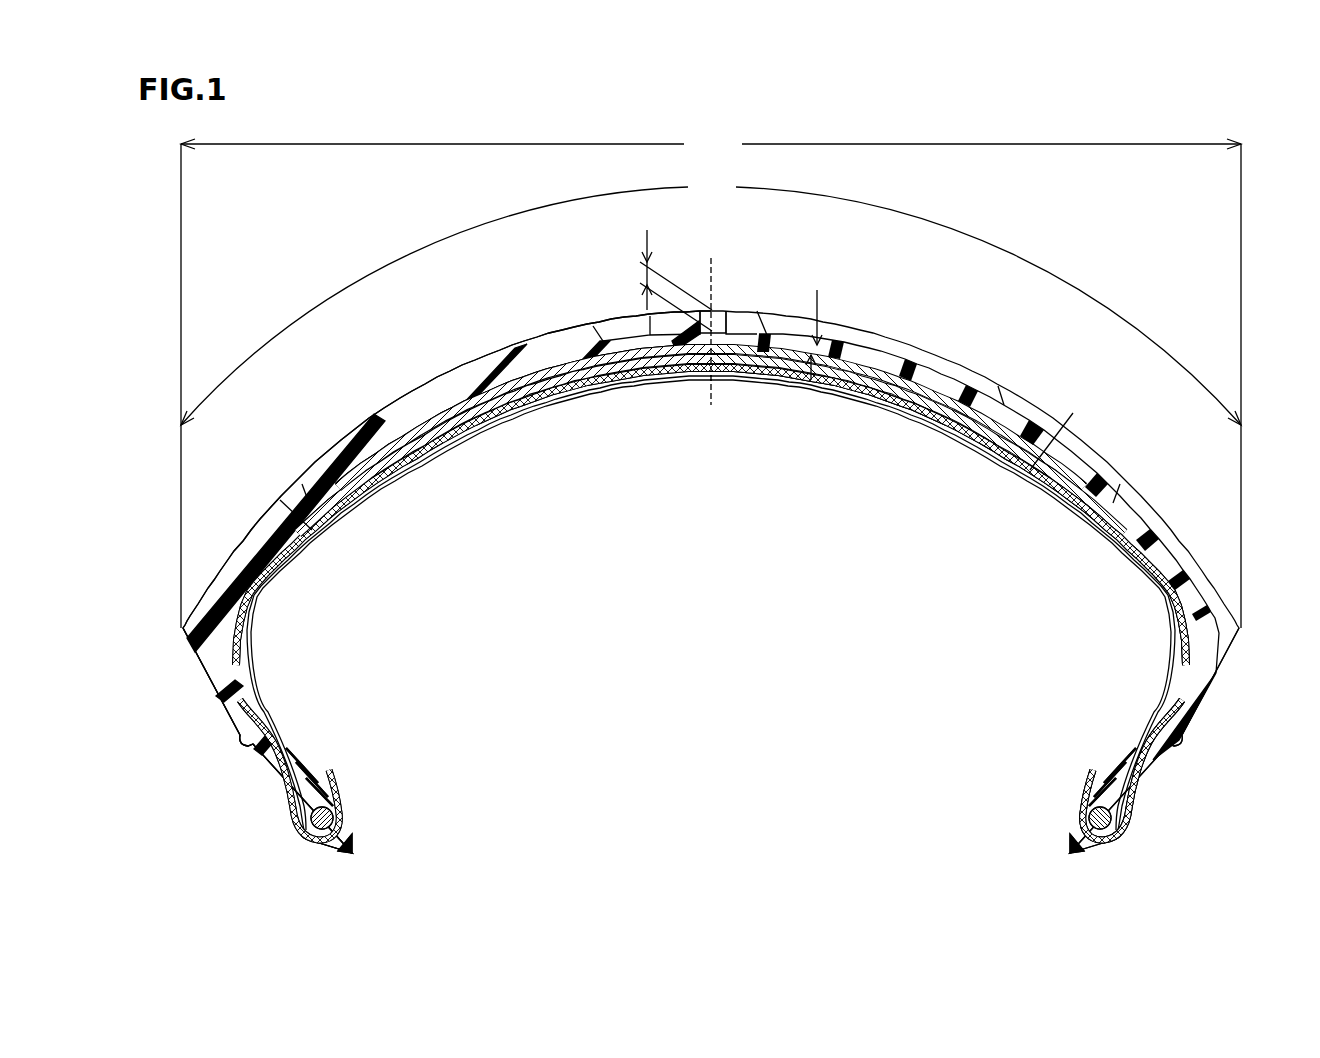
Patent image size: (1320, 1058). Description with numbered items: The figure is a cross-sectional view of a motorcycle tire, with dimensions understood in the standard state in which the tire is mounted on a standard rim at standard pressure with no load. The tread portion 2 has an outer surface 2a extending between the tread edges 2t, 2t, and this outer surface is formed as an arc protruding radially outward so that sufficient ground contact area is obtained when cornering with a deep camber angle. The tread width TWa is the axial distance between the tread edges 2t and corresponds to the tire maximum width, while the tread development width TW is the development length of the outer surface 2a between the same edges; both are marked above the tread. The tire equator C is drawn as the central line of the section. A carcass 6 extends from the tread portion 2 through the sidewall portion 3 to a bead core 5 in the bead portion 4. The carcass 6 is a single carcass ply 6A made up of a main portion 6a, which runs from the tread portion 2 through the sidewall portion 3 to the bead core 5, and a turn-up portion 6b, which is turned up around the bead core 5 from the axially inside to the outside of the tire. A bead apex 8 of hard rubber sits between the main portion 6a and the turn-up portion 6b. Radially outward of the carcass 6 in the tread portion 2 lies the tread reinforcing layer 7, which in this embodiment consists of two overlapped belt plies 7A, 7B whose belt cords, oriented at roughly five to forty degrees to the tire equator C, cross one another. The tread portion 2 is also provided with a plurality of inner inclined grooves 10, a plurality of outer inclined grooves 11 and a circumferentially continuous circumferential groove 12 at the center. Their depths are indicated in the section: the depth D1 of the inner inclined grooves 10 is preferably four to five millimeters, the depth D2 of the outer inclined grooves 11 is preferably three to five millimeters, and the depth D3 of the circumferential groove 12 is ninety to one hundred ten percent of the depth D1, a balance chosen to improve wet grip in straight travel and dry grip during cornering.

The tread portion 2 is at (1050, 365).
The outer surface 2a is at (447, 374).
The tread edge 2t is at (179, 605).
The sidewall portion 3 is at (228, 737).
The bead portion 4 is at (290, 822).
The bead core 5 is at (333, 818).
The carcass 6 is at (636, 604).
The carcass ply 6A is at (1048, 722).
The main portion 6a is at (1173, 660).
The turn-up portion 6b is at (1167, 712).
The tread reinforcing layer 7 is at (449, 597).
The belt ply 7A is at (371, 500).
The belt ply 7B is at (428, 465).
The bead apex 8 is at (308, 776).
The inner inclined groove 10 is at (882, 345).
The outer inclined groove 11 is at (249, 546).
The circumferential groove 12 is at (724, 318).
The tire equator C is at (711, 347).
The tread development width TW is at (711, 299).
The tread width TWa is at (711, 144).
The depth of inner inclined groove D1 is at (818, 326).
The depth of outer inclined groove D2 is at (293, 497).
The depth of circumferential groove D3 is at (656, 280).